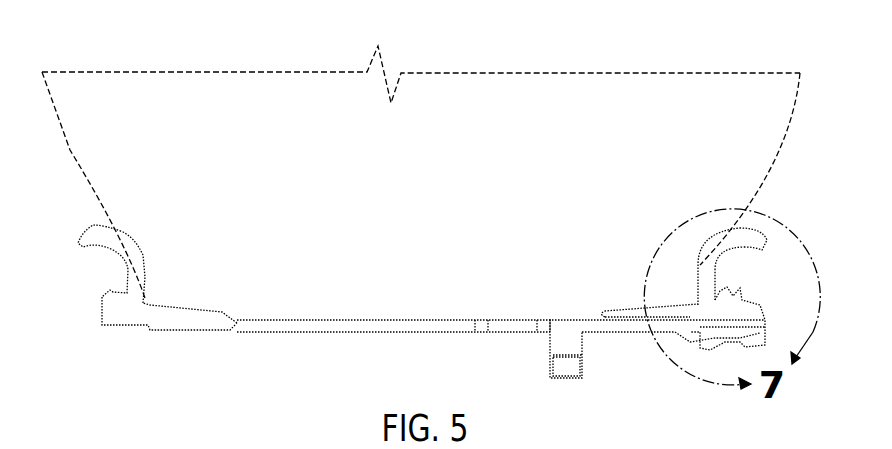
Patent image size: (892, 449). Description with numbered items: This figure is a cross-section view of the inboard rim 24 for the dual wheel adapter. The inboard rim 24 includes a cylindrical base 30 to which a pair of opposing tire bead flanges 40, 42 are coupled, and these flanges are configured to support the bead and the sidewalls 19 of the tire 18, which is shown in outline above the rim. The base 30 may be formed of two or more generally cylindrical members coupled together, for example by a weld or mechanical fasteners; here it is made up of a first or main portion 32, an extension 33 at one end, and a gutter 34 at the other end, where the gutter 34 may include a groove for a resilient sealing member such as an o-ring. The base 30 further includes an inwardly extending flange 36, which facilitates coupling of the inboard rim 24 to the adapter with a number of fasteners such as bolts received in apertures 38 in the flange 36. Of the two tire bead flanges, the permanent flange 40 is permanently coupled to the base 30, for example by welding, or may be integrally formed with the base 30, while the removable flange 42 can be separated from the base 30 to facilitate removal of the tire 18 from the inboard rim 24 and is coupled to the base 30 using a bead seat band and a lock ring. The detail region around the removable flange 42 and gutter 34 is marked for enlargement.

The tire 18 is at (190, 88).
The sidewalls 19 is at (85, 188).
The inboard rim 24 is at (501, 373).
The base 30 is at (501, 363).
The main portion 32 is at (277, 329).
The extension 33 is at (190, 327).
The gutter 34 is at (752, 337).
The inwardly extending flange 36 is at (570, 378).
The apertures 38 is at (555, 362).
The permanent flange 40 is at (118, 248).
The removable flange 42 is at (758, 236).